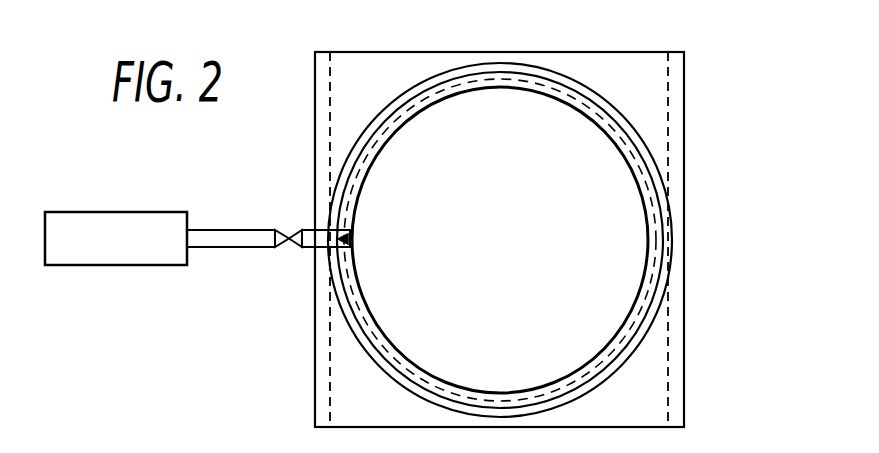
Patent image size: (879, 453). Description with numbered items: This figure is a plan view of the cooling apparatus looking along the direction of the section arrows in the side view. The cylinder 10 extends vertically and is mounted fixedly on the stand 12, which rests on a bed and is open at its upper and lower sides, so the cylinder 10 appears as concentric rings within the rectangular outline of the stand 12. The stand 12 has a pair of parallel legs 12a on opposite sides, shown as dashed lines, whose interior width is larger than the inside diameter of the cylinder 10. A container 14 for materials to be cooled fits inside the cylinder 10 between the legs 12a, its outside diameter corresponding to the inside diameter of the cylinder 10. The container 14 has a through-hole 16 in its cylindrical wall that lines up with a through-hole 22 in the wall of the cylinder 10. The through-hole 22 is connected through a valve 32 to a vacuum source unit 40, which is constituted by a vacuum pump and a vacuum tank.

The cylinder 10 is at (622, 113).
The stand 12 is at (345, 393).
The legs 12a is at (329, 337).
The container 14 is at (646, 170).
The through-hole 16 is at (350, 239).
The through-hole 22 is at (318, 253).
The valve 32 is at (281, 224).
The vacuum source unit 40 is at (171, 212).